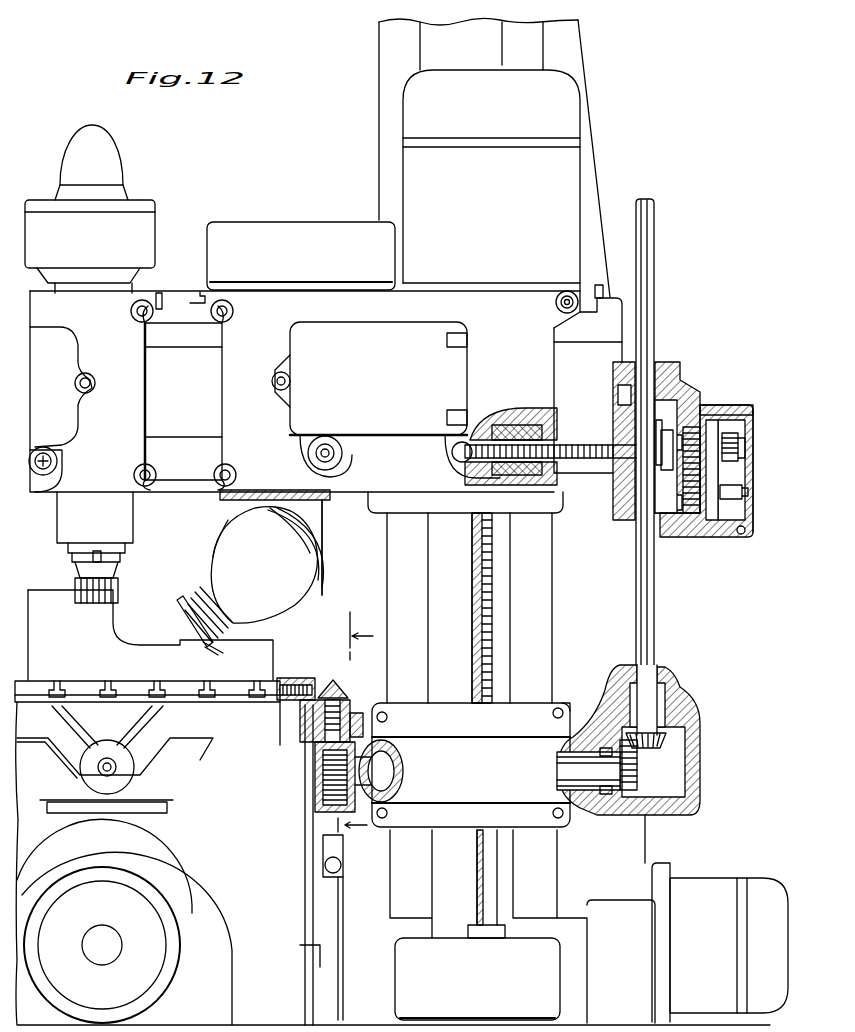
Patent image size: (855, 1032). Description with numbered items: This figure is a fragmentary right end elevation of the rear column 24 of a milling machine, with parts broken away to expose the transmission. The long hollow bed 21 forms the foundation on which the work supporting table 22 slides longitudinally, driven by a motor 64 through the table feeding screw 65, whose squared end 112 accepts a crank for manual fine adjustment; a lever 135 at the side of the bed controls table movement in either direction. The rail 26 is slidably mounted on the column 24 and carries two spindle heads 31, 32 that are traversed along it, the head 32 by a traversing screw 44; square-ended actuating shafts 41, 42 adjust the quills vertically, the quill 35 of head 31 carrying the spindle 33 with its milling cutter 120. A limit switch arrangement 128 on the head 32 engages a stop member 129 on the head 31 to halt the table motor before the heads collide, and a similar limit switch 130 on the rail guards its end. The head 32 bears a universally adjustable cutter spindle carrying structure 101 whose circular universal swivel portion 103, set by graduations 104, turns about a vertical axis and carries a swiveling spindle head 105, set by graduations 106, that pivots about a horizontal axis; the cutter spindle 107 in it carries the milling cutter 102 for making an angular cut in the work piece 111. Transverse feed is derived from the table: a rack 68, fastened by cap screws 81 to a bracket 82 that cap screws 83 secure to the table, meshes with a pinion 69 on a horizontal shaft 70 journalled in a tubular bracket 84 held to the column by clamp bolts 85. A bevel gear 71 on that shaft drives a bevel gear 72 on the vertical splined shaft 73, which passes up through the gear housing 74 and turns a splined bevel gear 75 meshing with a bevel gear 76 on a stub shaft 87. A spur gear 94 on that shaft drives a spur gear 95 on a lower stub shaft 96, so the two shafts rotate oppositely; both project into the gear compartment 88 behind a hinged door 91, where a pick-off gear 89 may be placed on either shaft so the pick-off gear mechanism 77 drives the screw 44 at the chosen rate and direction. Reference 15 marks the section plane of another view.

The rear column 24 is at (386, 62).
The rail 26 is at (183, 292).
The actuating stop member 129 is at (162, 309).
The limit switch arrangement 128 is at (199, 303).
The spindle head 31 is at (137, 396).
The spindle head 32 is at (237, 398).
The actuating shaft 41 is at (58, 462).
The actuating shaft 42 is at (343, 455).
The graduations 104 is at (287, 492).
The limit switch 130 is at (593, 302).
The traversing screw 44 is at (583, 445).
The gear housing 74 is at (683, 406).
The pick-off gear mechanism 77 is at (736, 402).
The stub shaft 87 is at (726, 403).
The gear compartment 88 is at (737, 427).
The pick-off gear 89 is at (740, 456).
The stub shaft 96 is at (710, 493).
The door 91 is at (755, 494).
The spur gear 95 is at (690, 522).
The spur gear 94 is at (662, 462).
The bevel gear 76 is at (660, 450).
The bevel gear 75 is at (622, 448).
The splined shaft 73 is at (655, 575).
The quill 35 is at (129, 517).
The spindle 33 is at (107, 565).
The milling cutter 120 is at (120, 588).
The work piece 111 is at (51, 592).
The cutter spindle carrying structure 101 is at (225, 561).
The universal swivel portion 103 is at (317, 516).
The graduations 106 is at (326, 560).
The swiveling spindle head 105 is at (310, 588).
The cutter spindle 107 is at (197, 610).
The milling cutter 102 is at (178, 610).
The section line 15 is at (348, 723).
The work supporting table 22 is at (82, 690).
The cap screws 83 is at (296, 679).
The bracket 82 is at (326, 703).
The cap screws 81 is at (355, 713).
The rack 68 is at (317, 747).
The pinion 69 is at (313, 790).
The lever 135 is at (348, 927).
The tubular bracket 84 is at (455, 752).
The clamp bolts 85 is at (563, 708).
The horizontal shaft 70 is at (565, 768).
The bevel gear 71 is at (630, 770).
The bevel gear 72 is at (668, 748).
The table feeding screw 65 is at (107, 758).
The squared end 112 is at (107, 768).
The drive motor 64 is at (155, 970).
The bed 21 is at (300, 898).